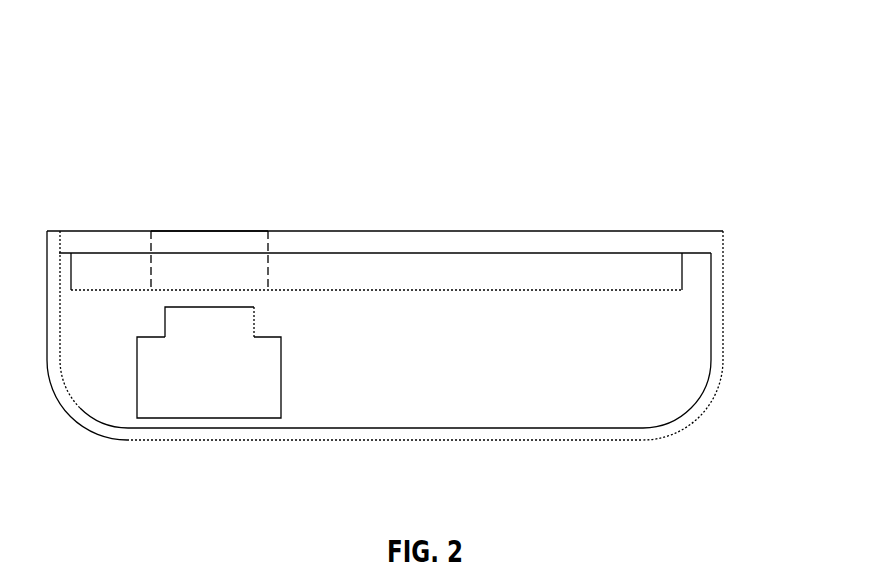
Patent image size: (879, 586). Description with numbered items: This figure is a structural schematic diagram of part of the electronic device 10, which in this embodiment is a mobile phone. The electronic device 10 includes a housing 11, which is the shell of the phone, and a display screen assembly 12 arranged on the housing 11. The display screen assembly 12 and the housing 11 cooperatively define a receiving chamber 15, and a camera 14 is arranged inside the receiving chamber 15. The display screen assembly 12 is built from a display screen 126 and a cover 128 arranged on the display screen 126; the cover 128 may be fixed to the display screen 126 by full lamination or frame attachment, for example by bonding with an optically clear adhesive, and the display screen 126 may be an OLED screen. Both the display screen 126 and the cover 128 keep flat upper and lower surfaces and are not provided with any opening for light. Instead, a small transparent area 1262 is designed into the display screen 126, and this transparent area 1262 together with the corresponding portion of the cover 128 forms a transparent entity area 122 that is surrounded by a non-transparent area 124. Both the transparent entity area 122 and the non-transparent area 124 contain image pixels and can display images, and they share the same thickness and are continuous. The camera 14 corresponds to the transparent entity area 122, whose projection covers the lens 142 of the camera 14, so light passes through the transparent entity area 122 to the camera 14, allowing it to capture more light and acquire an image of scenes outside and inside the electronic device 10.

The electronic device 10 is at (93, 66).
The housing 11 is at (581, 436).
The display screen assembly 12 is at (781, 227).
The camera 14 is at (263, 395).
The receiving chamber 15 is at (656, 383).
The transparent entity area 122 is at (226, 231).
The non-transparent area 124 is at (120, 231).
The display screen 126 is at (682, 280).
The cover 128 is at (695, 242).
The lens 142 is at (242, 325).
The transparent area 1262 is at (162, 277).